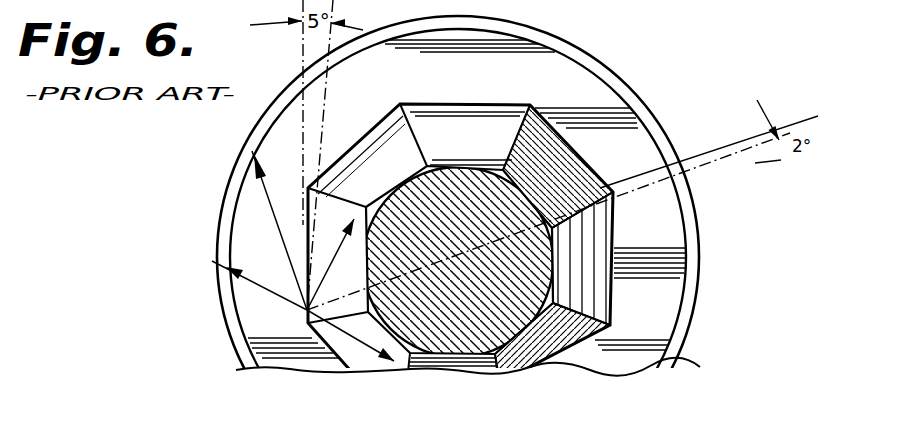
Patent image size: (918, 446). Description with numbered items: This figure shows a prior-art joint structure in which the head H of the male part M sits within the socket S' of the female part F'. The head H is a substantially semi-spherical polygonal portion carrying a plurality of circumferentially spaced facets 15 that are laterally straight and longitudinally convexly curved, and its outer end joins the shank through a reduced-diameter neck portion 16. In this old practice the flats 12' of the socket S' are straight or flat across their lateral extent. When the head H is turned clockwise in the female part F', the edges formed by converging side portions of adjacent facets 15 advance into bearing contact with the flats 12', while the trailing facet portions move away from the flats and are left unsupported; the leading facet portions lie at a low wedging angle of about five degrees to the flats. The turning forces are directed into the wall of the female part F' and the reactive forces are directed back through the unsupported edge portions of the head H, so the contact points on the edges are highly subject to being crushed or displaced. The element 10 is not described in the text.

The socket 10 is at (518, 231).
The flats 12' is at (656, 258).
The facets 15 is at (614, 240).
The neck portion 16 is at (616, 224).
The head H is at (480, 100).
The male part M is at (570, 184).
The female part F' is at (611, 90).
The socket S' is at (548, 215).